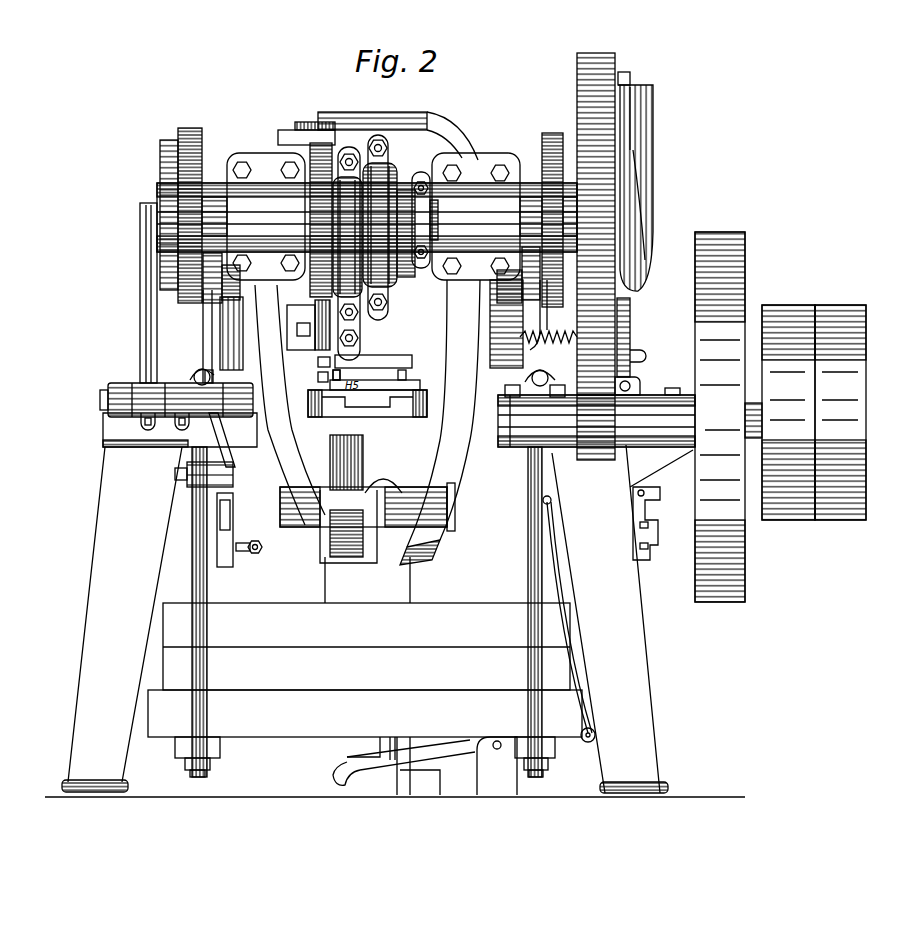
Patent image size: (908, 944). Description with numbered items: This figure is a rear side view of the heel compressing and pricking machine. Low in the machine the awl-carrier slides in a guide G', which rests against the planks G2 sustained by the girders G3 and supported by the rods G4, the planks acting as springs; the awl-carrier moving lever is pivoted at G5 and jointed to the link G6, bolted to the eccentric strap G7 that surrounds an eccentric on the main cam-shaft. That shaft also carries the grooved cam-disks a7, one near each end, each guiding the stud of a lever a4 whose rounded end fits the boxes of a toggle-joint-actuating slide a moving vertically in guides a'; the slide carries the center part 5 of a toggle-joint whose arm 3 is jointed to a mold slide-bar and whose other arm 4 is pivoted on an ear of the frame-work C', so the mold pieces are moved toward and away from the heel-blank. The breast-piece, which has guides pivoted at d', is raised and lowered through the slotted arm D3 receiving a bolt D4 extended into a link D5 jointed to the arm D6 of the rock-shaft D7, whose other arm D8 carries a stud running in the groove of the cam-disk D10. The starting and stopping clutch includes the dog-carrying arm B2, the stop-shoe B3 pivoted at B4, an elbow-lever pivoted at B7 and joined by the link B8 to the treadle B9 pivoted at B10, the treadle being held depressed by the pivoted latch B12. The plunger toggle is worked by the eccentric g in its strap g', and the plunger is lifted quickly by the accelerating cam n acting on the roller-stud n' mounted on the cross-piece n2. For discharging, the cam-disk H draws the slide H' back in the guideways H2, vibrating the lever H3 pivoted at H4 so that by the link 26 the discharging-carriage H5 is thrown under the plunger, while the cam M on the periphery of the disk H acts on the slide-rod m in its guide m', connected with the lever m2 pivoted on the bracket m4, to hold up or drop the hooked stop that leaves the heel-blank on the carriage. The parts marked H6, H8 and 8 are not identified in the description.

The cam-disk H is at (286, 132).
The slide H' is at (767, 415).
The guideways H2 is at (788, 399).
The lever H3 is at (840, 399).
The pivot H4 is at (746, 262).
The discharging-carriage H5 is at (603, 452).
The large gear H6 is at (577, 90).
The main shaft H8 is at (367, 217).
The guide G' is at (385, 580).
The planks G2 is at (365, 670).
The girders G3 is at (365, 757).
The rods G4 is at (340, 557).
The pivot G5 is at (450, 512).
The link G6 is at (362, 462).
The eccentric strap G7 is at (266, 216).
The second arm D3 is at (233, 530).
The bolt D4 is at (254, 545).
The link D5 is at (217, 530).
The arm D6 is at (230, 460).
The rock-shaft D7 is at (108, 399).
The second arm D8 is at (140, 266).
The cam-disk D10 is at (160, 150).
The dog-carrying arm B2 is at (652, 150).
The stop-shoe B3 is at (631, 330).
The pivot B4 is at (630, 386).
The pivot B7 is at (645, 493).
The link B8 is at (562, 590).
The treadle B9 is at (411, 766).
The pivot B10 is at (497, 749).
The pivoted latch B12 is at (356, 761).
The bed C' is at (548, 329).
The toggle-joint-actuating slide a is at (216, 333).
The guides a' is at (518, 338).
The lever a4 is at (205, 300).
The cam-disk a7 is at (190, 134).
The pivot d' is at (525, 275).
The eccentric g is at (387, 219).
The strap g' is at (398, 137).
The cam n is at (407, 247).
The roller-stud n' is at (430, 220).
The cross-piece n2 is at (438, 218).
The cam M is at (312, 283).
The slide-rod m is at (308, 334).
The guide m' is at (301, 329).
The lever m2 is at (318, 364).
The bracket m4 is at (318, 380).
The link 26 is at (340, 375).
The arm of toggle-joint 3 is at (343, 415).
The arm of toggle-joint 4 is at (194, 378).
The center part of toggle-joint 5 is at (200, 369).
The position 8 is at (177, 400).